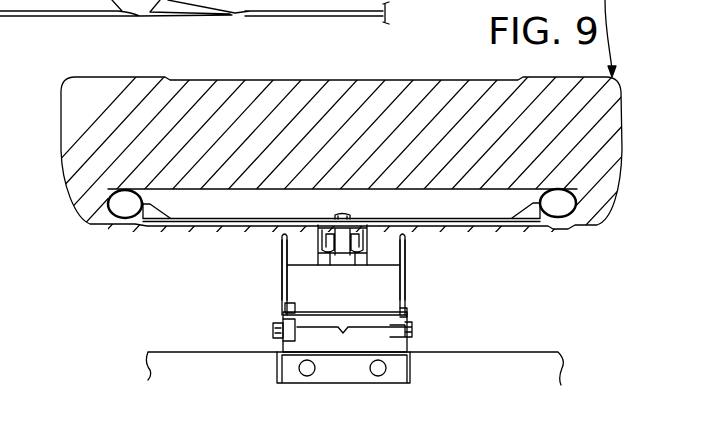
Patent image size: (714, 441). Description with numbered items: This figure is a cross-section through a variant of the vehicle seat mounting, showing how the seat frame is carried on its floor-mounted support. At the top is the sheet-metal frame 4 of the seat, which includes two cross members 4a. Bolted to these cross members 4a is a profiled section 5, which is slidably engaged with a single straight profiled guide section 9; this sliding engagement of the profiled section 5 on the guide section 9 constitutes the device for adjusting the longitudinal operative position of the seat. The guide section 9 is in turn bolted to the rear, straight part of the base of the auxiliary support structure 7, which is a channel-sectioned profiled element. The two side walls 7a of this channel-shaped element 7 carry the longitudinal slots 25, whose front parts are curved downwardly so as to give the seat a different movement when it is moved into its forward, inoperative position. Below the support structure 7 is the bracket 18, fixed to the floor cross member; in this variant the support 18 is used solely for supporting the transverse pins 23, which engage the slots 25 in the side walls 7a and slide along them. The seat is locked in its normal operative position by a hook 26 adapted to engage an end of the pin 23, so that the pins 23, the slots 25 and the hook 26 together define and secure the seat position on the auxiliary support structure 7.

The sheet-metal frame 4 is at (566, 232).
The cross members 4a is at (498, 225).
The profiled section 5 is at (364, 246).
The auxiliary support structure 7 is at (272, 268).
The side walls 7a is at (282, 243).
The profiled guide section 9 is at (345, 266).
The bracket 18 is at (358, 366).
The transverse pins 23 is at (270, 333).
The longitudinal slots 25 is at (277, 318).
The hook 26 is at (318, 312).